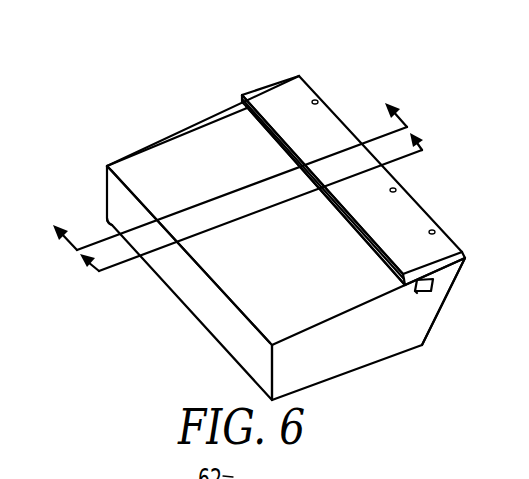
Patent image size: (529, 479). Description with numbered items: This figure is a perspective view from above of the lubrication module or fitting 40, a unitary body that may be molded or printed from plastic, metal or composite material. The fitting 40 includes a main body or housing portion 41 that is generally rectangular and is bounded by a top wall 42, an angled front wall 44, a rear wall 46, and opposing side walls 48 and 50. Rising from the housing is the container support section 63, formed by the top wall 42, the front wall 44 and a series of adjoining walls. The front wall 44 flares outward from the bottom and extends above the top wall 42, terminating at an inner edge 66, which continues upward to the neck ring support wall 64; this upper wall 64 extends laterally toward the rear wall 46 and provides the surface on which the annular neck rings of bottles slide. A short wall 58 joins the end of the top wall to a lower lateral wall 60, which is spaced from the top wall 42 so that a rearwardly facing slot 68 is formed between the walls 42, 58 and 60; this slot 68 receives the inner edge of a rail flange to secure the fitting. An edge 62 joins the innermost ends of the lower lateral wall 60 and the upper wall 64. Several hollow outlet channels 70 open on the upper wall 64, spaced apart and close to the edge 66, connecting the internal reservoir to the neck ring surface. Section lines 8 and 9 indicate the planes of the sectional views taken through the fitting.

The lubrication module or fitting 40 is at (118, 53).
The main body or housing portion 41 is at (114, 153).
The top wall 42 is at (198, 170).
The angled front wall 44 is at (448, 307).
The rear wall 46 is at (217, 317).
The side wall 48 is at (135, 156).
The side wall 50 is at (370, 352).
The short wall 58 is at (434, 280).
The lower lateral wall 60 is at (416, 291).
The edge 62 is at (270, 150).
The container support section 63 is at (368, 99).
The neck ring support wall 64 is at (333, 135).
The inner edge 66 is at (464, 258).
The slot 68 is at (347, 241).
The hollow outlet channels 70 is at (316, 99).
The section line 8- 8 is at (260, 221).
The section line 9- 9 is at (234, 184).